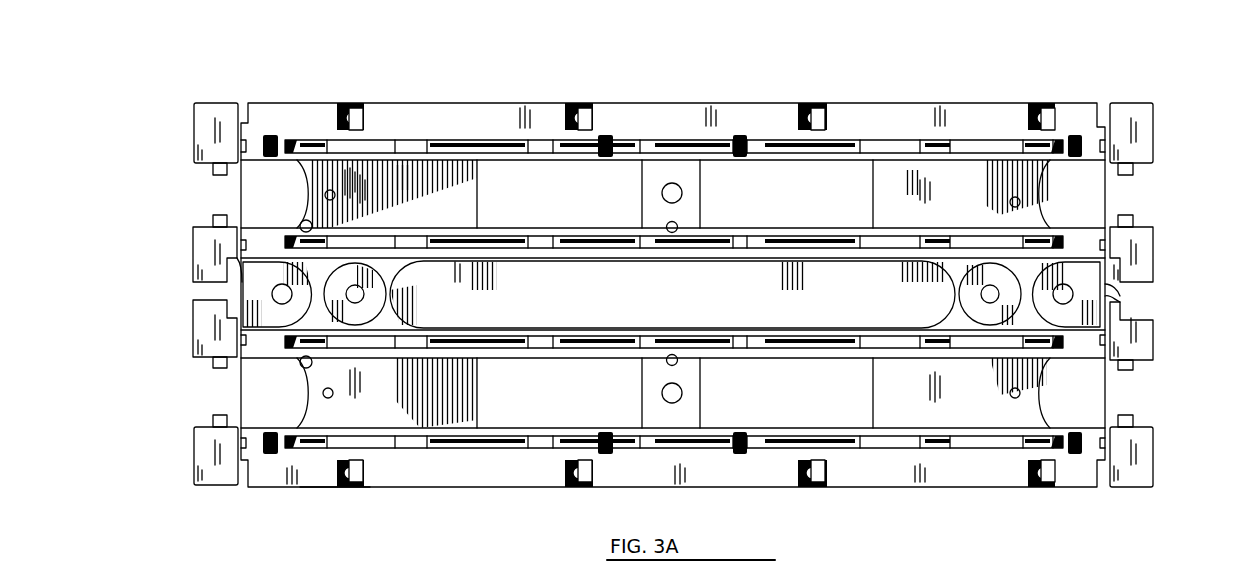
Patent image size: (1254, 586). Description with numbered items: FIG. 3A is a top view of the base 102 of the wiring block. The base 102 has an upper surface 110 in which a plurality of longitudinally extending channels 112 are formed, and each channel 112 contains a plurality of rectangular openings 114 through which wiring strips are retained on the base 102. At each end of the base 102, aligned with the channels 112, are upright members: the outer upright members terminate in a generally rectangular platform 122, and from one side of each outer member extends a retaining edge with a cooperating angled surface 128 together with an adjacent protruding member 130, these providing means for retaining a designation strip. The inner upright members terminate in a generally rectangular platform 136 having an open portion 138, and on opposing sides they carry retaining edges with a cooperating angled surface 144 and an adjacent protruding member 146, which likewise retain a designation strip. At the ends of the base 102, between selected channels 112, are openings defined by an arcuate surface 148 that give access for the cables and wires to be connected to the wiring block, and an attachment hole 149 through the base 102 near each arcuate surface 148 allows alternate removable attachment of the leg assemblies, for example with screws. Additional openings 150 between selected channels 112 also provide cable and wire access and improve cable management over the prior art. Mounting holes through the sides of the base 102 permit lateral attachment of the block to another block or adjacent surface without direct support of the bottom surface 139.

The base 102 is at (1056, 62).
The upper surface 110 is at (673, 295).
The channel 112 is at (832, 240).
The rectangular opening 114 is at (540, 152).
The rectangular platform 122 is at (205, 122).
The angled surface 128 is at (236, 170).
The protruding member 130 is at (1133, 171).
The rectangular platform 136 is at (200, 250).
The open portion 138 is at (1122, 292).
The bottom surface 139 is at (331, 487).
The angled surface 144 is at (238, 214).
The protruding member 146 is at (215, 366).
The arcuate surface 148 is at (300, 190).
The attachment hole 149 is at (325, 197).
The opening 150 is at (617, 172).